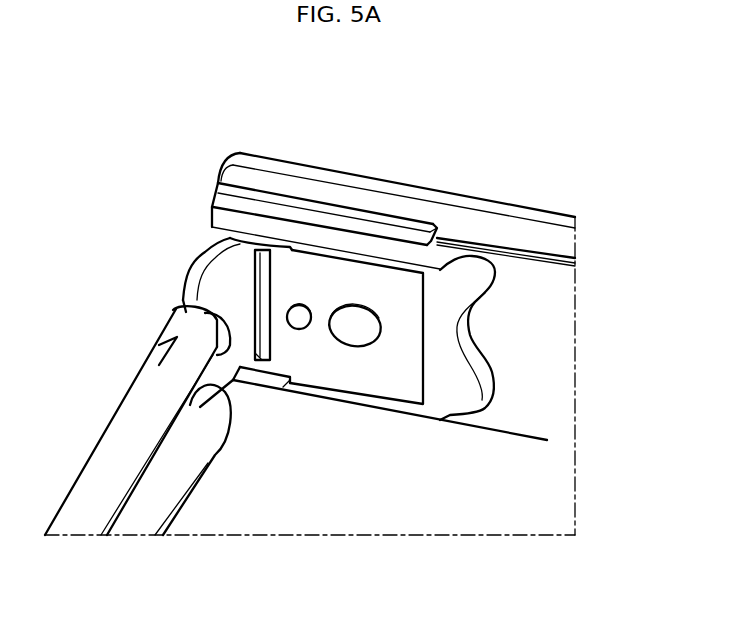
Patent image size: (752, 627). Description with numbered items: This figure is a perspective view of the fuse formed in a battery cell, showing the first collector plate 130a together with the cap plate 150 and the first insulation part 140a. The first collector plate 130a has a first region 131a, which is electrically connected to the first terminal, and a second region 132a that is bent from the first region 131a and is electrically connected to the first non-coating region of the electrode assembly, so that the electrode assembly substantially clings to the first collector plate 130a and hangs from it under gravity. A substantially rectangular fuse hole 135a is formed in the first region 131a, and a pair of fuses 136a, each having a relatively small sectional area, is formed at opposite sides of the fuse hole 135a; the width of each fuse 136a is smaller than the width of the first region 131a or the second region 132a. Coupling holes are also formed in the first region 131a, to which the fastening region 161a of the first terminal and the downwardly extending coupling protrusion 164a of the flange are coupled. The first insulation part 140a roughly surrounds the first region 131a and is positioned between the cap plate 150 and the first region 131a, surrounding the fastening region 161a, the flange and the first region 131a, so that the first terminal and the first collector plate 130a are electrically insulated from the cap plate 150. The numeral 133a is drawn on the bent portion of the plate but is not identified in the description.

The first collector plate 130a is at (171, 275).
The first region 131a is at (410, 380).
The second region 132a is at (203, 258).
The arm 133a is at (131, 425).
The fuse hole 135a is at (265, 265).
The fuses 136a is at (263, 262).
The first insulation part 140a is at (496, 242).
The cap plate 150 is at (555, 316).
The fastening region 161a is at (354, 332).
The coupling protrusion 164a is at (300, 318).